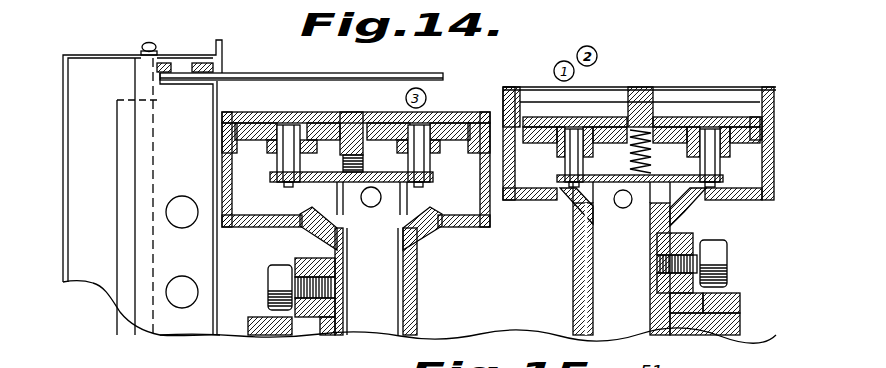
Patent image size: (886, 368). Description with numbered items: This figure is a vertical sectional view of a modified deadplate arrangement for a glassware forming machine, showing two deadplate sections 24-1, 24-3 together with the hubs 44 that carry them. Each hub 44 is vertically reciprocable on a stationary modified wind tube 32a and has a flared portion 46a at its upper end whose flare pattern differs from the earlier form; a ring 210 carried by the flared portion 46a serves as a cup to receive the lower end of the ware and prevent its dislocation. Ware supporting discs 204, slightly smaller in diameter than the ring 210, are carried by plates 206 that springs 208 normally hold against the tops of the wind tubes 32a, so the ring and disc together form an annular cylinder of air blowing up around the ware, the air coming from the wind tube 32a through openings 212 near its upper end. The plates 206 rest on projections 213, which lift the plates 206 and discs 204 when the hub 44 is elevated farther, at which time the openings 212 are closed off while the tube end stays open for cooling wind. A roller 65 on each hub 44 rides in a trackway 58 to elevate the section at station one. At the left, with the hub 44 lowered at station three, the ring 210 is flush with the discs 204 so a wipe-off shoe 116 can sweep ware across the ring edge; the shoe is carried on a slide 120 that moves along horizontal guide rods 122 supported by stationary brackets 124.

The wipe-off shoe 116 is at (282, 52).
The slide 120 is at (122, 113).
The horizontal guide rods 122 is at (183, 228).
The stationary brackets 124 is at (205, 108).
The deadplate section 24-1 is at (672, 84).
The deadplate section 24-3 is at (453, 106).
The ware supporting discs 204 is at (387, 114).
The plates 206 is at (325, 181).
The springs 208 is at (365, 160).
The ring 210 is at (750, 96).
The openings 212 is at (371, 207).
The projections 213 is at (648, 197).
The wind tube 32a is at (405, 256).
The hub 44 is at (415, 284).
The flared portion 46a is at (488, 213).
The trackway 58 is at (258, 318).
The roller 65 is at (282, 272).